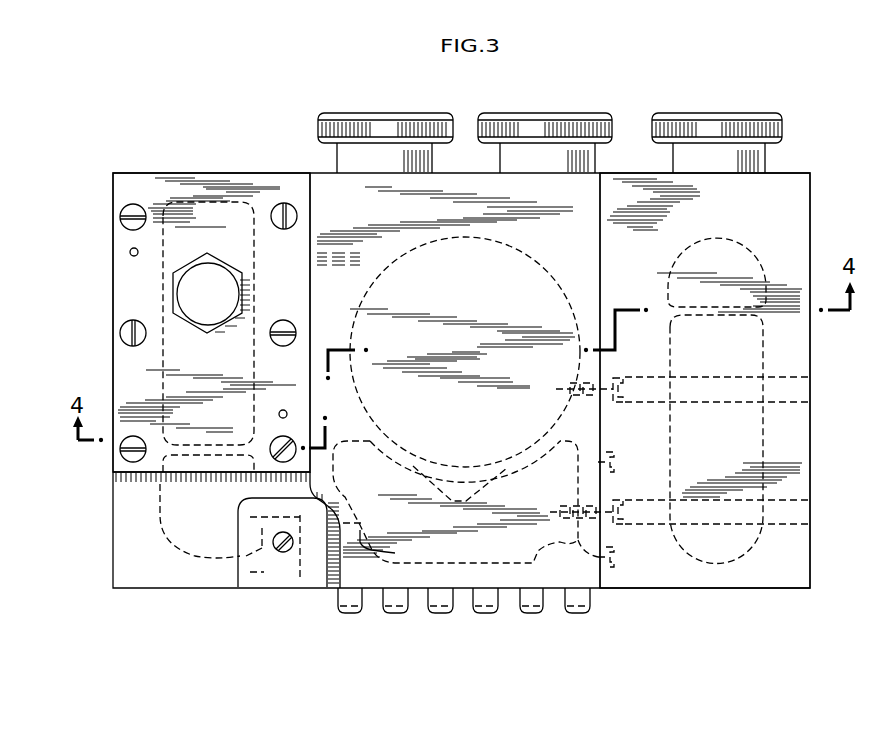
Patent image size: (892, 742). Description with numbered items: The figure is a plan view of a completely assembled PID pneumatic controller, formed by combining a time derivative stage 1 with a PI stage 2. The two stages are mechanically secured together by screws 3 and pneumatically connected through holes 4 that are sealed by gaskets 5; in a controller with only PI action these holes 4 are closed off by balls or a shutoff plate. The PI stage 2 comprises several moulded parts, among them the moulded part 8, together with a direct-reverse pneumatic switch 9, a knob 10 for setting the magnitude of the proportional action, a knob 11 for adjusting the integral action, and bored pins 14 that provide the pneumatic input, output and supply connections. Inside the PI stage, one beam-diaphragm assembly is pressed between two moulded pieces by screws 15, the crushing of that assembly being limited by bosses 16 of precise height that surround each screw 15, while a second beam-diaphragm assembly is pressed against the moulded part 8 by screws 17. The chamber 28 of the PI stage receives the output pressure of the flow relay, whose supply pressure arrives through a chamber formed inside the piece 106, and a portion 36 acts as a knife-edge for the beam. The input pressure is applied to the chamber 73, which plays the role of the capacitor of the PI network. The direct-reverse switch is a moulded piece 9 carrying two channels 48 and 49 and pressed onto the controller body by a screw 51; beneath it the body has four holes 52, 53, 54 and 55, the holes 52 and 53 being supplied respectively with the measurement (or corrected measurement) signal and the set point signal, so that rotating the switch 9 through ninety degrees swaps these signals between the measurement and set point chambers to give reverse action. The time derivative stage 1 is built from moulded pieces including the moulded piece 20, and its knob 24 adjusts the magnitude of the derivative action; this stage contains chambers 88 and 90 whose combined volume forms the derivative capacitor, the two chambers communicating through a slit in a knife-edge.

The time derivative stage 1 is at (711, 572).
The PI stage 2 is at (502, 572).
The screws 3 is at (627, 377).
The holes 4 is at (628, 463).
The gaskets 5 is at (604, 450).
The moulded part 8 is at (128, 280).
The direct-reverse pneumatic switch 9 is at (288, 565).
The knob for the magnitude of proportional action 10 is at (380, 122).
The knob for the adjustment of the integral action 11 is at (547, 122).
The bored pins 14 is at (445, 613).
The screws 15 is at (101, 642).
The bosses 16 is at (830, 635).
The screws 17 is at (122, 212).
The moulded piece 20 is at (790, 560).
The knob 24 is at (737, 122).
The chamber 28 is at (250, 230).
The portion serving as knife-edge 36 is at (218, 478).
The channel 48 is at (250, 553).
The channel 49 is at (343, 523).
The screw 51 is at (267, 538).
The hole 52 is at (259, 518).
The hole 53 is at (305, 575).
The hole 54 is at (250, 580).
The hole 55 is at (330, 502).
The chamber 73 is at (555, 281).
The chamber 88 is at (762, 413).
The chamber 90 is at (742, 252).
The piece 106 is at (222, 303).